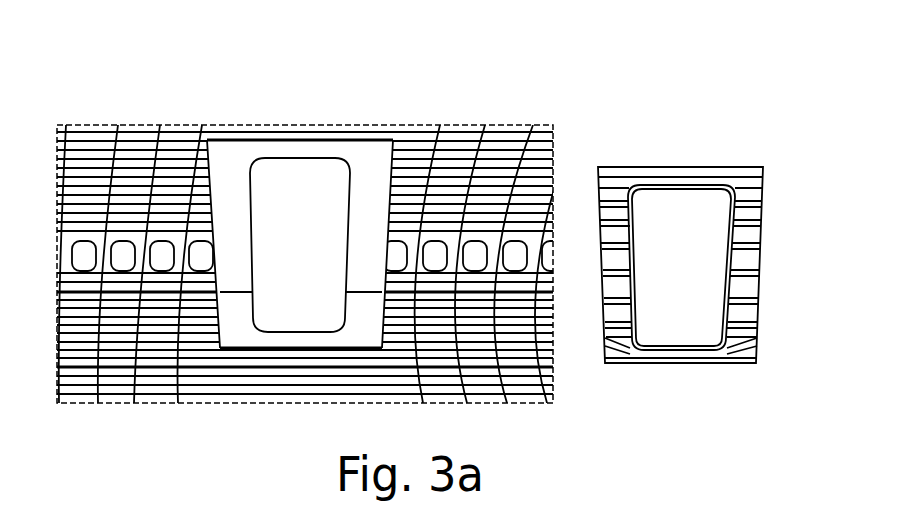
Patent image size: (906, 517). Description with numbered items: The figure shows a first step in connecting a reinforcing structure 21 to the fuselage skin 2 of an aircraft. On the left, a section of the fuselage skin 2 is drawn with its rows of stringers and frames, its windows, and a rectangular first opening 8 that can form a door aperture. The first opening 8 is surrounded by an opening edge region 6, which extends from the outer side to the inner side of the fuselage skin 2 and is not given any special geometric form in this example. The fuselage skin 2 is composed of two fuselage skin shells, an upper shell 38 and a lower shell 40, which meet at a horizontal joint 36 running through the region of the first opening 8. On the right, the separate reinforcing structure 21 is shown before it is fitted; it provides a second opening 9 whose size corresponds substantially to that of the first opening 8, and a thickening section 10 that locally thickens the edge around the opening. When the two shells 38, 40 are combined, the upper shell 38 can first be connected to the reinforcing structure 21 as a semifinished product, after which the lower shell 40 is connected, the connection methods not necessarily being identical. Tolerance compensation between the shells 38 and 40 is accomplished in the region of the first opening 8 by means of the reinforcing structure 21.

The fuselage skin 2 is at (316, 246).
The opening edge region 6 is at (235, 330).
The first opening 8 is at (306, 258).
The second opening 9 is at (689, 285).
The thickening section 10 is at (725, 358).
The reinforcing structure 21 is at (680, 244).
The joint 36 is at (160, 300).
The upper shell 38 is at (118, 156).
The lower shell 40 is at (94, 396).